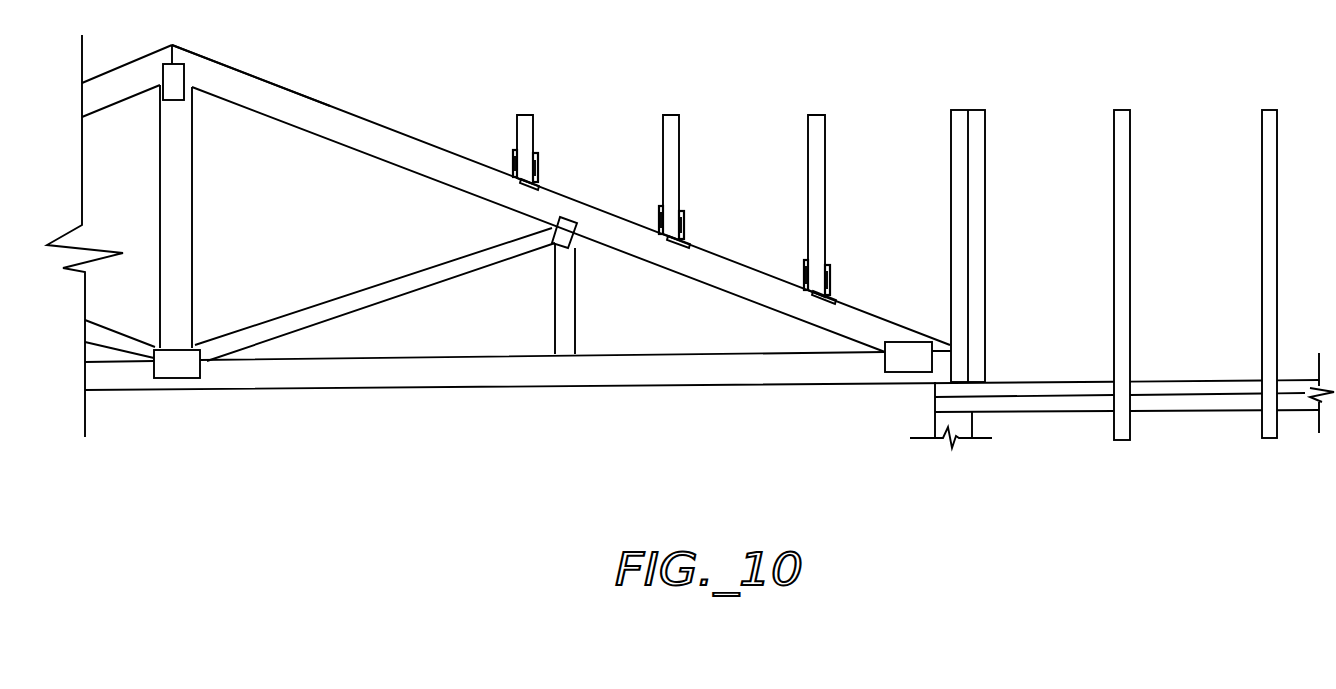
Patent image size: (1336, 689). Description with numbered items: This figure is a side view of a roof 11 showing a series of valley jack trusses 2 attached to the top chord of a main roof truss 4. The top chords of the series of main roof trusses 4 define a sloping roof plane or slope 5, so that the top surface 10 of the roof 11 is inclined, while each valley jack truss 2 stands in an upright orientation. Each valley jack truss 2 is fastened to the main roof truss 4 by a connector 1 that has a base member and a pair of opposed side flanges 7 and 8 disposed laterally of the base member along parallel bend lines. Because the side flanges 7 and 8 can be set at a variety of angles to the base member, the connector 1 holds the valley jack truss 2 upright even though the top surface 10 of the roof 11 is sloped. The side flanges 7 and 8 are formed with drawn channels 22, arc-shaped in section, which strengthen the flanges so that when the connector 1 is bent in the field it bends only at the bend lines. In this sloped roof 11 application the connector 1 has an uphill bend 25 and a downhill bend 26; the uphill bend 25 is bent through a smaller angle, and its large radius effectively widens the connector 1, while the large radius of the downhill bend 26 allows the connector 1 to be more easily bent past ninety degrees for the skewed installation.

The connector 1 is at (552, 183).
The valley jack truss 2 is at (545, 116).
The main roof truss 4 is at (669, 400).
The sloping roof plane 5 is at (334, 92).
The first side flange 7 is at (508, 138).
The second side flange 8 is at (549, 145).
The top surface 10 is at (245, 72).
The roof 11 is at (155, 33).
The channels 22 is at (512, 168).
The uphill bend 25 is at (652, 233).
The downhill bend 26 is at (692, 243).